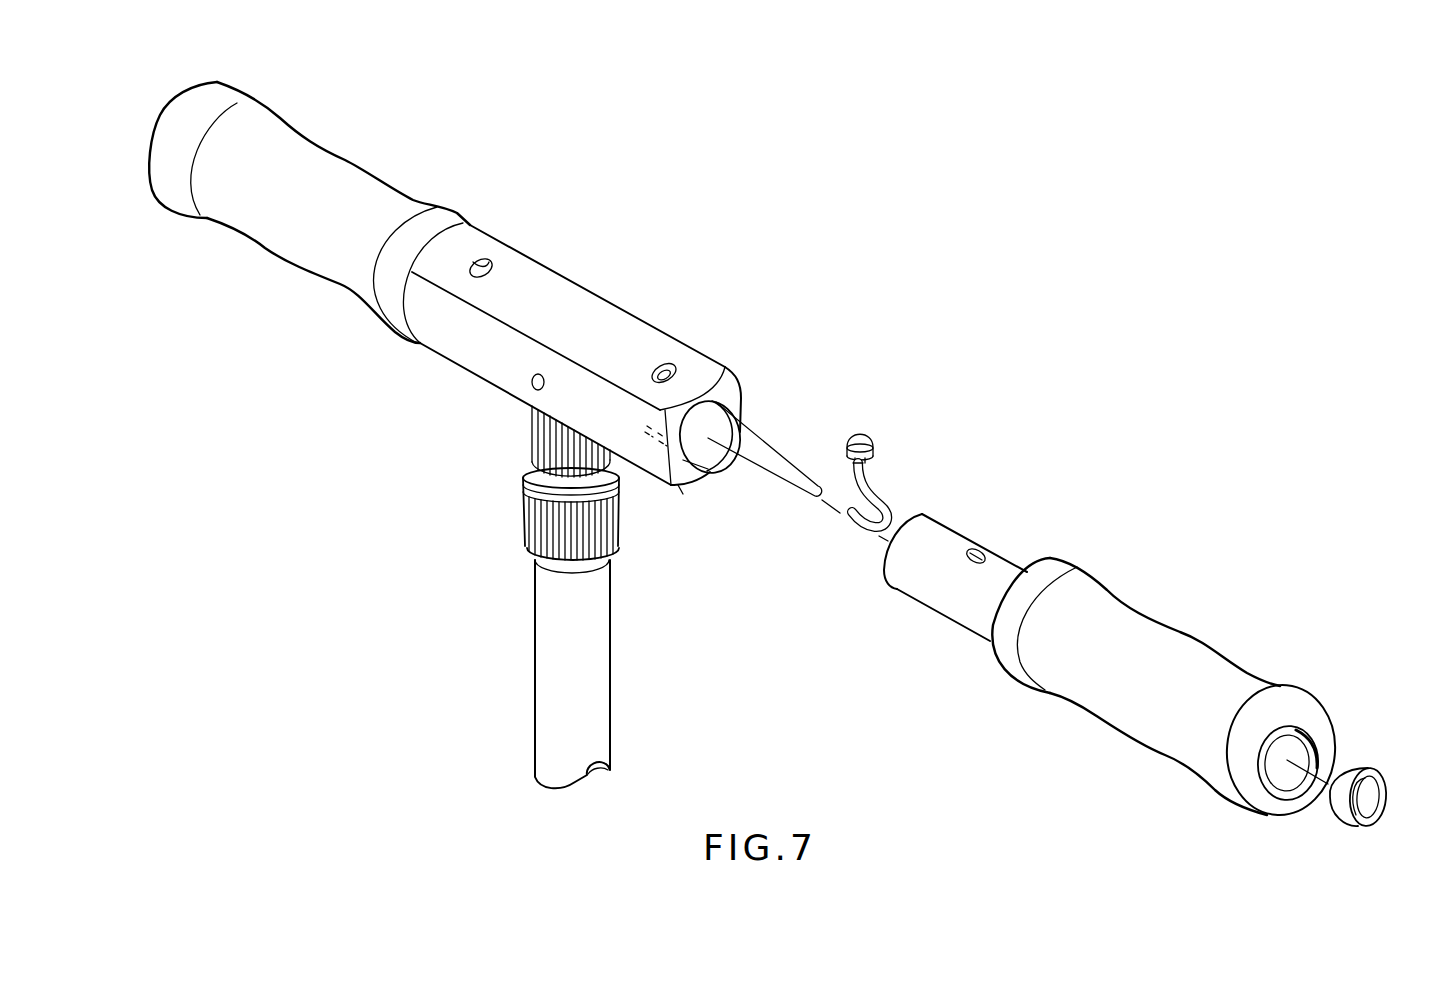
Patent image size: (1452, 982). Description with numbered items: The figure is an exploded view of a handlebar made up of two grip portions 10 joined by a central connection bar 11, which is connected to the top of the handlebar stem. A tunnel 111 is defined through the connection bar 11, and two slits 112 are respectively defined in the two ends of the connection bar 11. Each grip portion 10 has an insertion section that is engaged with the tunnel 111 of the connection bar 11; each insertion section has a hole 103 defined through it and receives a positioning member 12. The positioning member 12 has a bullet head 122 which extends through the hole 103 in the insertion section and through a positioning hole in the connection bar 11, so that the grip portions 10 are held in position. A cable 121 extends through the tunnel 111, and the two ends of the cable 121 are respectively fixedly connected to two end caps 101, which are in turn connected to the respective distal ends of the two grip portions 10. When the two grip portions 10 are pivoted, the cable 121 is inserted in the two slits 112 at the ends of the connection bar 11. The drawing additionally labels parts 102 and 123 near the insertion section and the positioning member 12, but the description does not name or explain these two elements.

The grip portion 10 is at (360, 177).
The connection bar 11 is at (643, 331).
The tunnel 111 is at (702, 422).
The slit 112 is at (703, 470).
The positioning member 12 is at (858, 426).
The cable 121 is at (757, 441).
The bullet head 122 is at (858, 435).
The hook spring 123 is at (878, 498).
The end cap 101 is at (1380, 776).
The tube 102 is at (972, 612).
The hole 103 is at (982, 552).